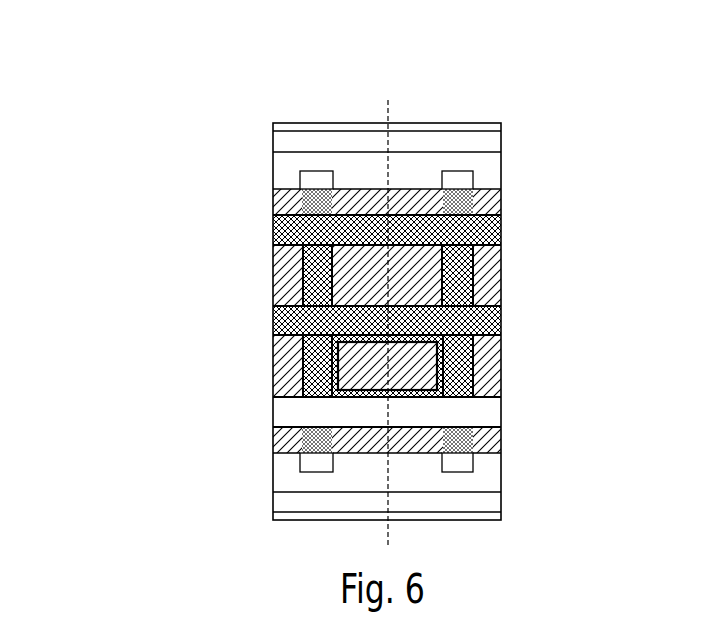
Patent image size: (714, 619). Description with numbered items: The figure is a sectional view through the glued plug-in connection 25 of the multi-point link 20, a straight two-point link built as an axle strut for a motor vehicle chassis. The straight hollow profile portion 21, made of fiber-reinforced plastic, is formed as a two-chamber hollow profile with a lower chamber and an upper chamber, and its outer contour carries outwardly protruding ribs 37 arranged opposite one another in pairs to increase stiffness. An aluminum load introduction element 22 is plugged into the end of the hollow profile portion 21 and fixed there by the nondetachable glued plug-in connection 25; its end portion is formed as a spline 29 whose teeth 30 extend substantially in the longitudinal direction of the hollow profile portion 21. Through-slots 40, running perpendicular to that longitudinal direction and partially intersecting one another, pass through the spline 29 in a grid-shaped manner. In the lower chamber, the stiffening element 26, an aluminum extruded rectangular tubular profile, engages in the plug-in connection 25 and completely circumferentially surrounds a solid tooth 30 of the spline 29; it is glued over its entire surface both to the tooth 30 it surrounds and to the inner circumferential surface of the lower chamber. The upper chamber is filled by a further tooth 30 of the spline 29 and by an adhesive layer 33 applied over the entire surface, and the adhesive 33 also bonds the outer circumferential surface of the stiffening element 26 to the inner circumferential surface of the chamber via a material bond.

The multi-point link 20 is at (138, 96).
The hollow profile portion 21 is at (293, 380).
The load introduction element 22 is at (483, 114).
The glued plug-in connection 25 is at (517, 313).
The stiffening element 26 is at (445, 368).
The spline 29 is at (514, 264).
The teeth 30 is at (407, 262).
The adhesive 33 is at (288, 212).
The ribs 37 is at (283, 230).
The through-slots 40 is at (315, 164).